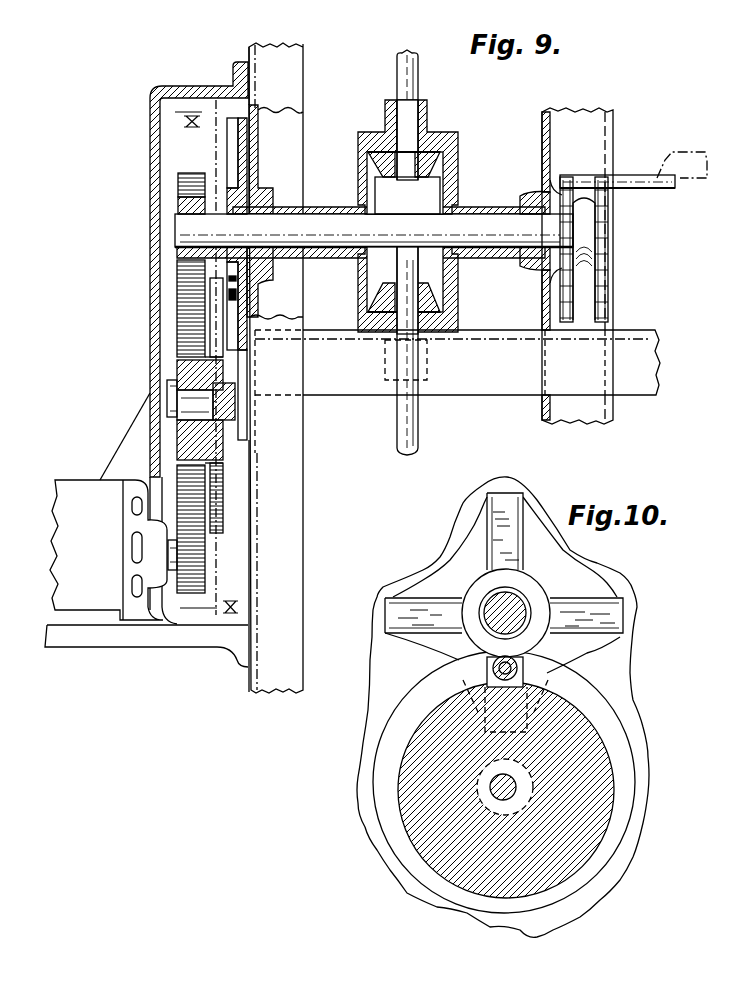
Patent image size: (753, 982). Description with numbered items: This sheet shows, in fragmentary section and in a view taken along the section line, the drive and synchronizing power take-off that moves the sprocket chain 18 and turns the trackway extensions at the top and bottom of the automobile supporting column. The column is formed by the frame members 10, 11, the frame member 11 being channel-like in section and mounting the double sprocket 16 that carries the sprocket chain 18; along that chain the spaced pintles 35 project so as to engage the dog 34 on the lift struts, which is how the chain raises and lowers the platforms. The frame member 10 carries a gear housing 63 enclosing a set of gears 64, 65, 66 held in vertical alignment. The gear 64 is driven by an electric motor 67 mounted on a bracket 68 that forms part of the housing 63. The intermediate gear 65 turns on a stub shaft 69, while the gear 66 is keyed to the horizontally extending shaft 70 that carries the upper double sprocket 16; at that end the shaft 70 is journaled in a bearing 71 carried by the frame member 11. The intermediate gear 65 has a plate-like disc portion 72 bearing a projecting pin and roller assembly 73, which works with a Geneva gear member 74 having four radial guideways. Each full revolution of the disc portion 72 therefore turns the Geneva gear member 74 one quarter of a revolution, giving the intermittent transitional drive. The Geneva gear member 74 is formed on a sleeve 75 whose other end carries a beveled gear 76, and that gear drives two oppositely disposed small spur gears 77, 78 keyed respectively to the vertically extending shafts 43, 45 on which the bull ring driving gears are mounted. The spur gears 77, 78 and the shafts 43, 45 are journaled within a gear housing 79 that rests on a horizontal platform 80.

In FIG. 9, the frame member 10 is at (283, 76).
In FIG. 10, the frame member 10 is at (616, 671).
In FIG. 9, the frame member 11 is at (590, 130).
In FIG. 9, the double sprocket 16 is at (583, 233).
In FIG. 9, the sprocket chain 18 is at (600, 297).
In FIG. 9, the dog 34 is at (682, 150).
In FIG. 9, the pintle 35 is at (662, 190).
In FIG. 9, the shaft 43 is at (397, 73).
In FIG. 9, the shaft 45 is at (395, 418).
In FIG. 9, the gear housing 63 is at (153, 132).
In FIG. 9, the gear 64 is at (197, 573).
In FIG. 9, the intermediate gear 65 is at (187, 321).
In FIG. 9, the gear 66 is at (180, 184).
In FIG. 9, the electric motor 67 is at (79, 481).
In FIG. 9, the bracket 68 is at (157, 640).
In FIG. 9, the stub shaft 69 is at (233, 388).
In FIG. 10, the stub shaft 69 is at (497, 790).
In FIG. 9, the shaft 70 is at (317, 228).
In FIG. 10, the shaft 70 is at (513, 597).
In FIG. 9, the bearing 71 is at (521, 207).
In FIG. 9, the disc portion 72 is at (220, 480).
In FIG. 10, the disc portion 72 is at (600, 753).
In FIG. 9, the pin and roller assembly 73 is at (232, 291).
In FIG. 10, the pin and roller assembly 73 is at (490, 672).
In FIG. 9, the Geneva gear member 74 is at (237, 158).
In FIG. 10, the Geneva gear member 74 is at (623, 603).
In FIG. 9, the sleeve 75 is at (324, 265).
In FIG. 9, the beveled gear 76 is at (382, 200).
In FIG. 9, the spur gear 77 is at (443, 157).
In FIG. 9, the spur gear 78 is at (432, 298).
In FIG. 9, the gear housing 79 is at (426, 157).
In FIG. 9, the horizontal platform 80 is at (463, 385).